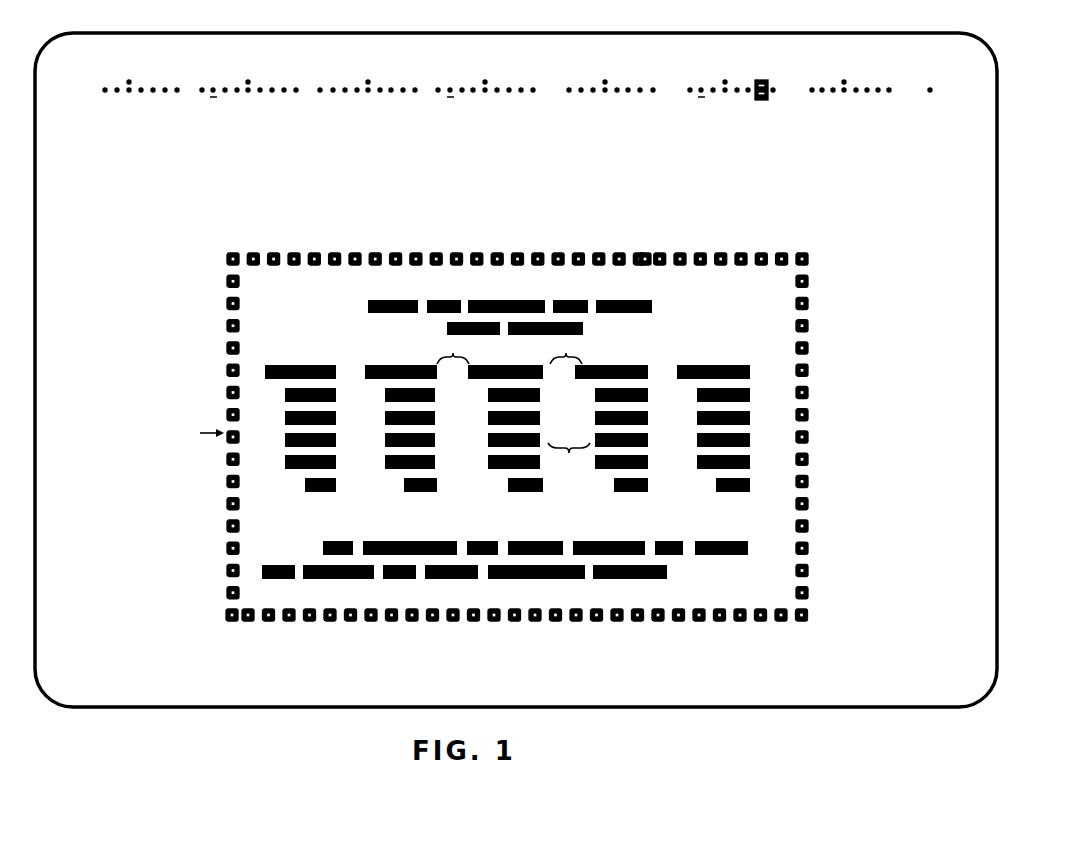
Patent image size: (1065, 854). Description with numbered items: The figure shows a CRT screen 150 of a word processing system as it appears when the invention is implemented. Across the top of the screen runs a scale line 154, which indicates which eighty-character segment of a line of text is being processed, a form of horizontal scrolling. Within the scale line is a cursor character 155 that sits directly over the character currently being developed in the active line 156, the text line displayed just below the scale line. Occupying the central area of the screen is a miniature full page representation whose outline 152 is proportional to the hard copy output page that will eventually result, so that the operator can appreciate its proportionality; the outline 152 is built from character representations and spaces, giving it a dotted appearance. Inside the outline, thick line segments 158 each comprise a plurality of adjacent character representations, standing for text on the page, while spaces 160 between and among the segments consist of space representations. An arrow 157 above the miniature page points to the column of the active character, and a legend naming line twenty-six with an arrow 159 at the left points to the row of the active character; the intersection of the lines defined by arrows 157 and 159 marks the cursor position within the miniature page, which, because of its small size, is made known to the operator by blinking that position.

The CRT screen 150 is at (996, 322).
The miniature full page representation outline 152 is at (810, 287).
The scale line 154 is at (935, 89).
The cursor character 155 is at (762, 80).
The active line 156 is at (870, 129).
The arrow 157 is at (645, 247).
The thick line segments 158 is at (652, 306).
The arrow 159 is at (192, 445).
The spaces 160 is at (474, 648).